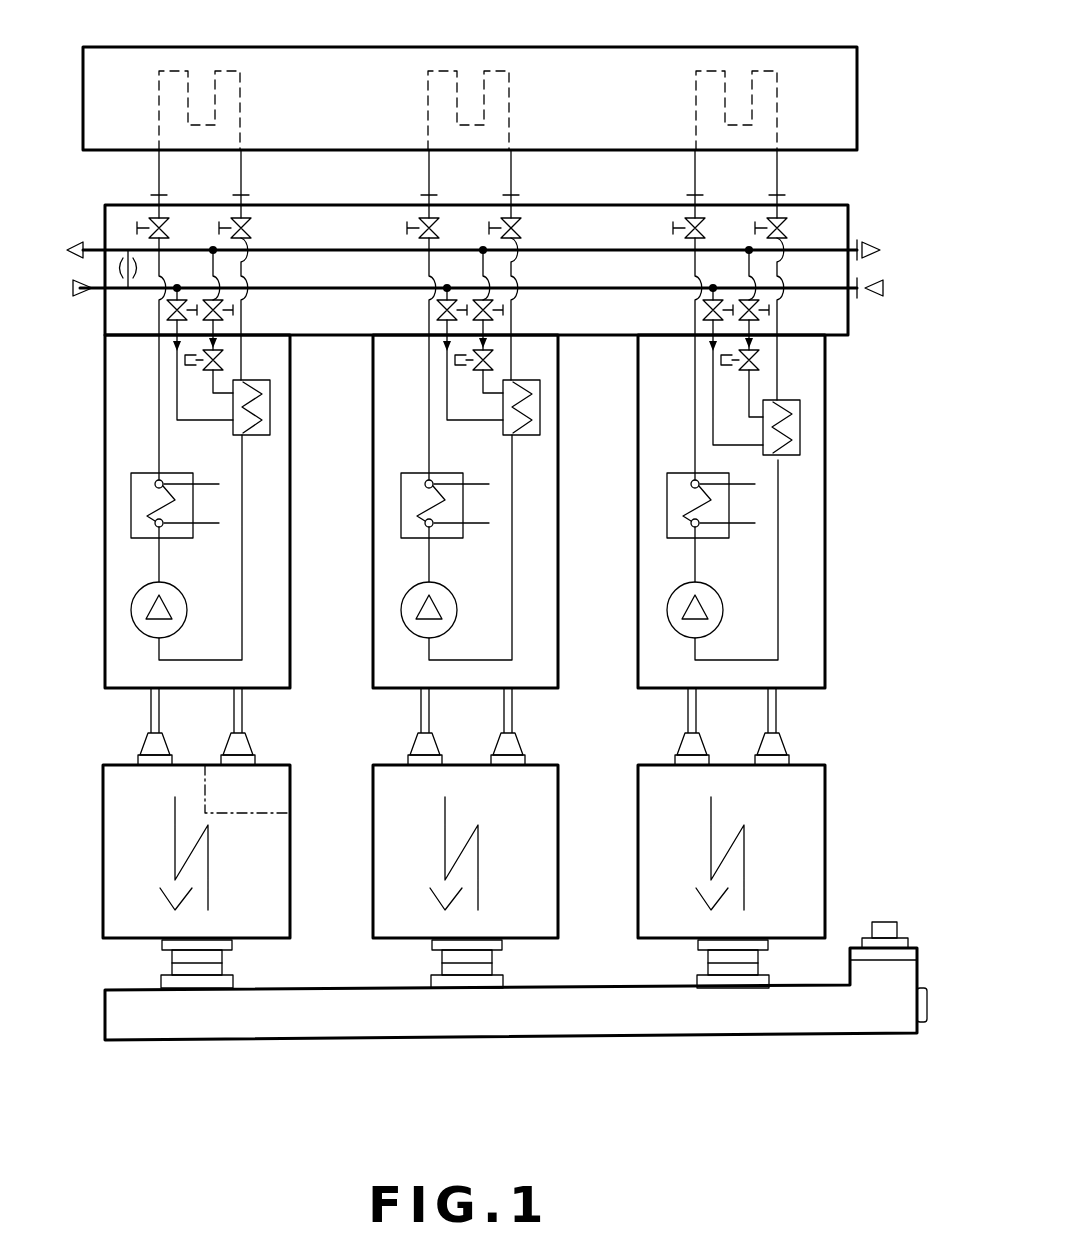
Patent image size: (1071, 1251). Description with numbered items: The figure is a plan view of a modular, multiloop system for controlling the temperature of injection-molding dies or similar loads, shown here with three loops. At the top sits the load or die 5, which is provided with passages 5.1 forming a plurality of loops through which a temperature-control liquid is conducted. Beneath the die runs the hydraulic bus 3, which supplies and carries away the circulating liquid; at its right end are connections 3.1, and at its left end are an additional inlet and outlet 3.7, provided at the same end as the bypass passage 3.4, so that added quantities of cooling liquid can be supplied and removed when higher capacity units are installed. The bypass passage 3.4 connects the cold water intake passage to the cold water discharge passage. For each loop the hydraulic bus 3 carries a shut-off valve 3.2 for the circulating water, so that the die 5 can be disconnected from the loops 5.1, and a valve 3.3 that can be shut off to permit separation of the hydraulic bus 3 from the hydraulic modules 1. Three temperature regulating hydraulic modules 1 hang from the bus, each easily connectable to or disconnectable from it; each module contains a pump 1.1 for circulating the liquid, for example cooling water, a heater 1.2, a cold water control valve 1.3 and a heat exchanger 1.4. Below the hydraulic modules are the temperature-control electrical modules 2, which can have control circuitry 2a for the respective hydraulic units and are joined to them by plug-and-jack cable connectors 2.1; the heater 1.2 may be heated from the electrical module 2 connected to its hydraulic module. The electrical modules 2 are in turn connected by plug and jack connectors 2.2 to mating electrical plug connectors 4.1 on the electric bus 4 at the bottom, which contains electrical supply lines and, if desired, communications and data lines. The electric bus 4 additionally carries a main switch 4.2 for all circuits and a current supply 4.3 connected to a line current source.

The temperature regulating hydraulic module 1 is at (387, 653).
The pump 1.1 is at (410, 611).
The heater 1.2 is at (142, 522).
The cold water control valve 1.3 is at (778, 356).
The heat exchanger 1.4 is at (262, 433).
The temperature-control electrical module 2 is at (380, 872).
The control circuitry 2a is at (265, 780).
The cable connector 2.1 is at (692, 742).
The plug and jack connector 2.2 is at (190, 957).
The hydraulic bus 3 is at (818, 222).
The manifold connections 3.1 is at (876, 240).
The shut-off valve 3.2 is at (420, 226).
The valve 3.3 is at (438, 312).
The bypass passage 3.4 is at (122, 268).
The additional inlet and outlet 3.7 is at (68, 243).
The electric bus 4 is at (622, 1020).
The mating electrical plug connector 4.1 is at (193, 975).
The main switch 4.2 is at (863, 948).
The current supply 4.3 is at (923, 1017).
The load or die 5 is at (600, 64).
The passages 5.1 is at (772, 108).